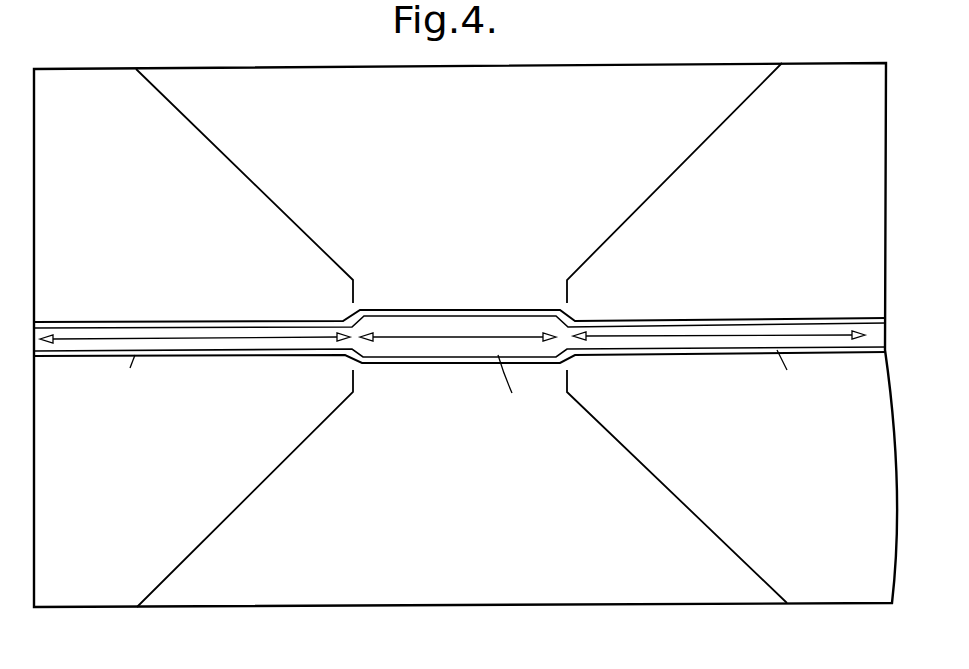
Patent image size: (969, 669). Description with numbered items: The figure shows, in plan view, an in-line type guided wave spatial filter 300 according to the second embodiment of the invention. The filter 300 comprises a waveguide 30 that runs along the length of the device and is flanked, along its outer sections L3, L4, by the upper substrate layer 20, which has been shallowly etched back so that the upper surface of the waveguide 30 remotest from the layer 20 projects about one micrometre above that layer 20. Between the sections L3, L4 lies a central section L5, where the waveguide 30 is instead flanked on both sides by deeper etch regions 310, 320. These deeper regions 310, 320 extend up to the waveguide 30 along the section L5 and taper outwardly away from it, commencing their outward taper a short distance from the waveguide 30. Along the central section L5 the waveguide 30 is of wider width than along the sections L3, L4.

The in-line guided wave spatial filter 300 is at (690, 31).
The upper substrate layer 20 is at (153, 240).
The deeper etch region 310 is at (483, 159).
The deeper etch region 320 is at (483, 467).
The waveguide 30 is at (215, 339).
The section L3 is at (100, 338).
The section L4 is at (678, 332).
The central section L5 is at (408, 317).